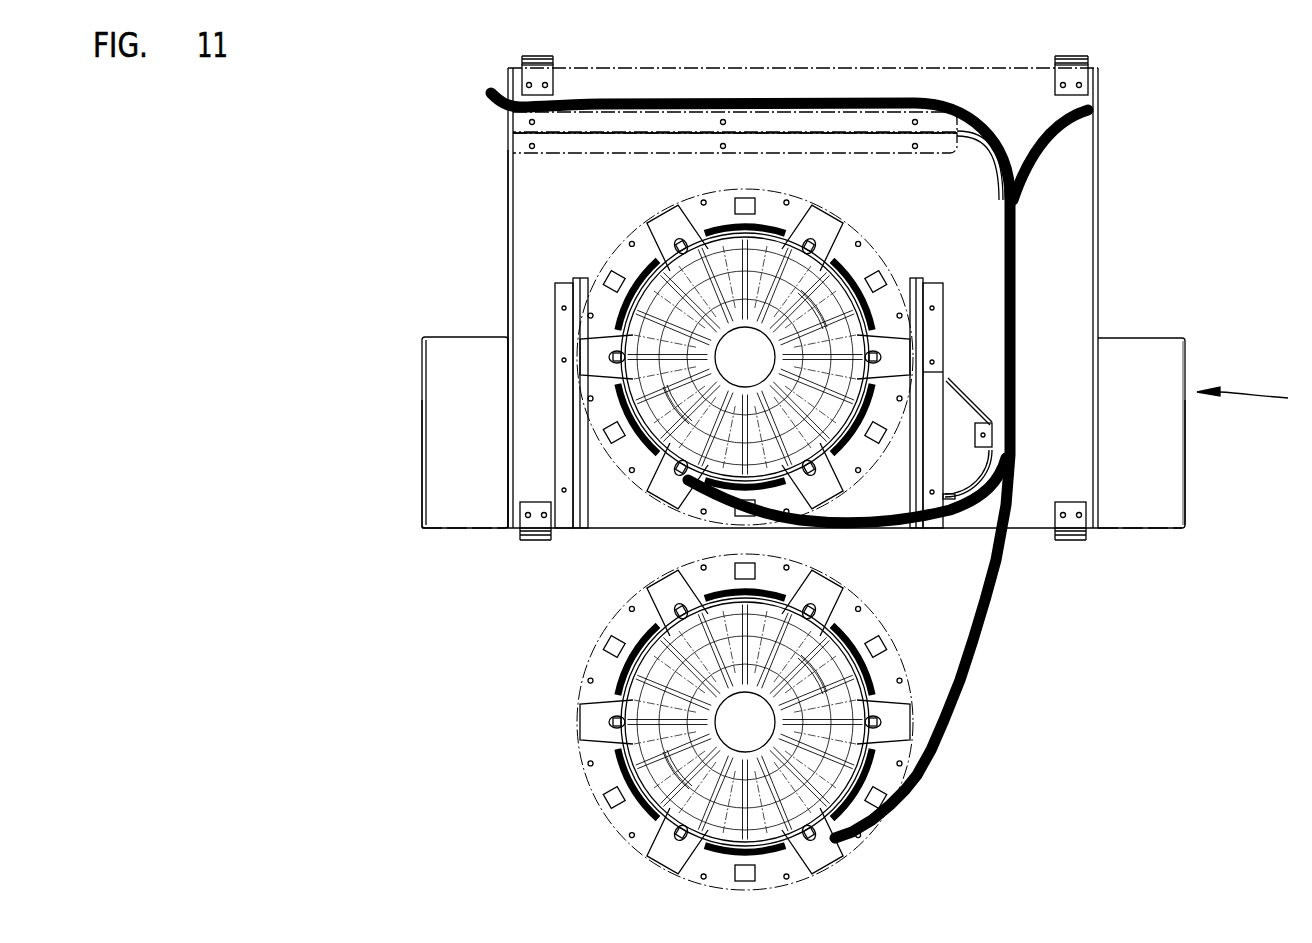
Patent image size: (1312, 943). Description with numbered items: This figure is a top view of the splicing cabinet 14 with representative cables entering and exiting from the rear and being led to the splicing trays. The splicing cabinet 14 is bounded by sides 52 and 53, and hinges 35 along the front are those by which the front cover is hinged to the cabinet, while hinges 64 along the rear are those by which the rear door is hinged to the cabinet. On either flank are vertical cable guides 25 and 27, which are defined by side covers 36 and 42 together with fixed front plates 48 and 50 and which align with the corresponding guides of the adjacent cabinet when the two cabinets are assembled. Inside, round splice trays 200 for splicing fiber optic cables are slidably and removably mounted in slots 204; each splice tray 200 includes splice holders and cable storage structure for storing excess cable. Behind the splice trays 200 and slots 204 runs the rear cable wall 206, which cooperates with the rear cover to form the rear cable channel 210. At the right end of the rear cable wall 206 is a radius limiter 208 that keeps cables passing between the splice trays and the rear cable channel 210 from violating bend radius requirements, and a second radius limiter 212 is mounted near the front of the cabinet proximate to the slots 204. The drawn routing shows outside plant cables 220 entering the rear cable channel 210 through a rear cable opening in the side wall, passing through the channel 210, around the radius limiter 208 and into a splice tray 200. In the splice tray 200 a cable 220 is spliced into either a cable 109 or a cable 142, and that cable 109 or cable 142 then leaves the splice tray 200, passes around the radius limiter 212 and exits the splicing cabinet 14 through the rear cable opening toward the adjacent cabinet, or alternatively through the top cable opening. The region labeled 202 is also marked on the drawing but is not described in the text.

The splicing cabinet 14 is at (1254, 398).
The vertical cable guide 25 is at (1162, 449).
The vertical cable guide 27 is at (482, 426).
The hinge 35 is at (533, 542).
The side cover 36 is at (1188, 485).
The side cover 42 is at (422, 460).
The fixed front plate 48 is at (1128, 531).
The fixed front plate 50 is at (477, 530).
The side 52 is at (1098, 215).
The side 53 is at (508, 225).
The hinge 64 is at (539, 57).
The cable 109 is at (1014, 324).
The cable 142 is at (1088, 112).
The splice tray 200 is at (632, 477).
The panel section 202 is at (1048, 117).
The slot 204 is at (582, 283).
The rear cable wall 206 is at (825, 133).
The radius limiter 208 is at (990, 150).
The rear cable channel 210 is at (656, 95).
The radius limiter 212 is at (992, 422).
The outside plant cable 220 is at (499, 92).